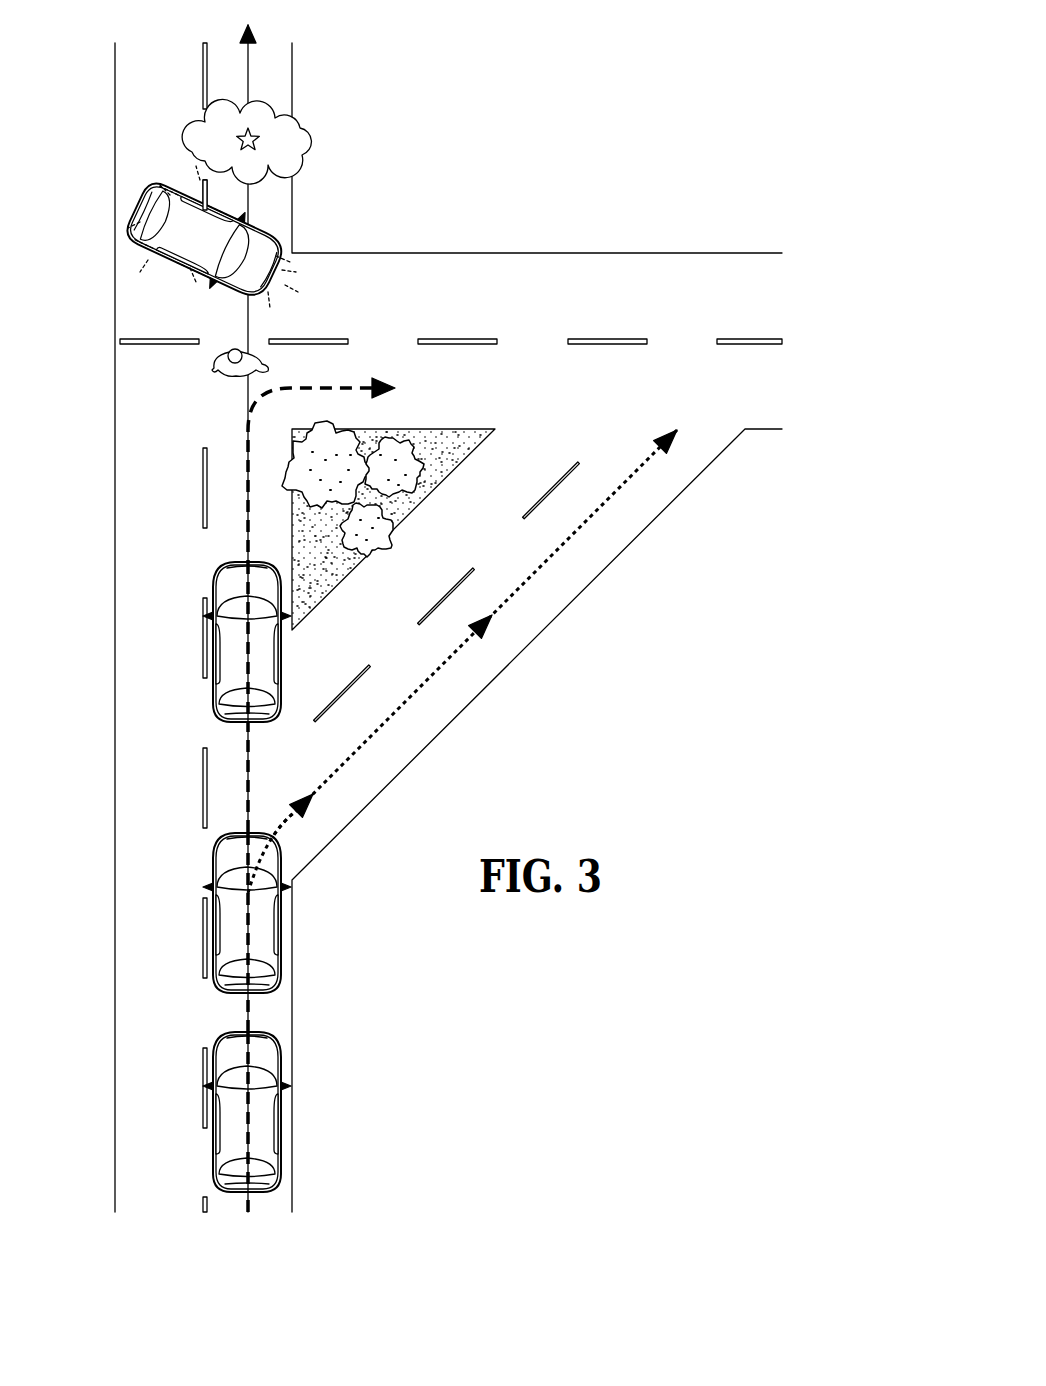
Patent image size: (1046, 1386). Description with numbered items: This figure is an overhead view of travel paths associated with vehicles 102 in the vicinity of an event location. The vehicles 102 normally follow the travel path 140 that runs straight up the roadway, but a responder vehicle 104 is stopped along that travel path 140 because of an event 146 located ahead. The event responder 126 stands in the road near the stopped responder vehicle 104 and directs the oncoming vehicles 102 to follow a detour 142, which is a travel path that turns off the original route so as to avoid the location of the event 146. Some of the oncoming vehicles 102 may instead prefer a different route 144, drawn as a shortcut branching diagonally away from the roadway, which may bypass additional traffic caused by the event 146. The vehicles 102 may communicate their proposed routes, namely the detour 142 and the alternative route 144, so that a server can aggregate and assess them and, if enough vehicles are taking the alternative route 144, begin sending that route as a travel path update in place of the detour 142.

The vehicles 102 is at (215, 647).
The responder vehicle 104 is at (258, 268).
The event responder 126 is at (235, 345).
The travel path 140 is at (250, 205).
The detour 142 is at (270, 393).
The alternative route 144 is at (415, 690).
The event 146 is at (313, 140).